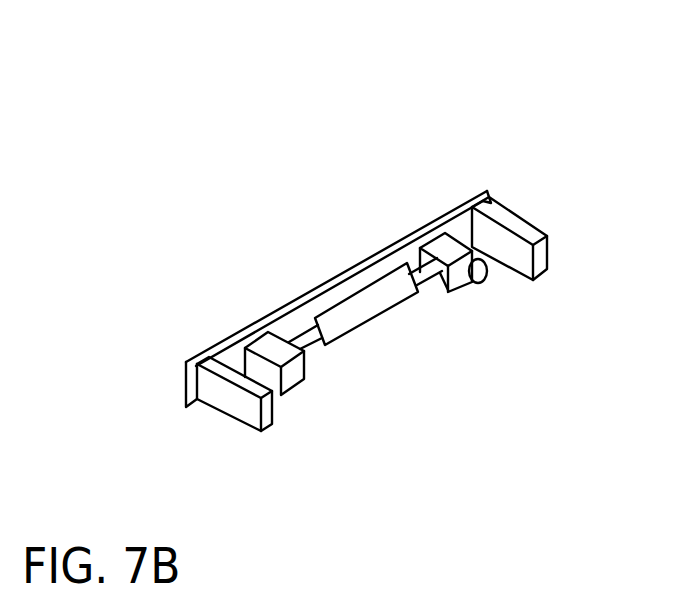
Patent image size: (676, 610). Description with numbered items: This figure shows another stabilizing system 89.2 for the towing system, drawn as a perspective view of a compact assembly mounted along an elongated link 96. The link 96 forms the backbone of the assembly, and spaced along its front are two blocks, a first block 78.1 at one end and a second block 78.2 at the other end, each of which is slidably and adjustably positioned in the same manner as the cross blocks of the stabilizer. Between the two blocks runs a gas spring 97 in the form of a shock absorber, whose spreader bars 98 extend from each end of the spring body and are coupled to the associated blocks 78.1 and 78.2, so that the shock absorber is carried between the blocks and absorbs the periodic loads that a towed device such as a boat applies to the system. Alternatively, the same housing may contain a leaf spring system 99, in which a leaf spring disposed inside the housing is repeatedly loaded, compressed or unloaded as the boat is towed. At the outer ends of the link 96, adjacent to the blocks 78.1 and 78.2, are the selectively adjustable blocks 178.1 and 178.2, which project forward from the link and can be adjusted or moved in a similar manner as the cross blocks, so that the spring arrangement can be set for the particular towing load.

The system 89.2 is at (406, 134).
The link 96 is at (366, 316).
The spreader bars 98 is at (430, 283).
The gas spring 97 is at (378, 337).
The leaf spring system 99 is at (395, 302).
The cross block 78.1 is at (303, 366).
The selectively adjustable block 178.1 is at (311, 405).
The cross block 78.2 is at (482, 283).
The selectively adjustable block 178.2 is at (541, 277).